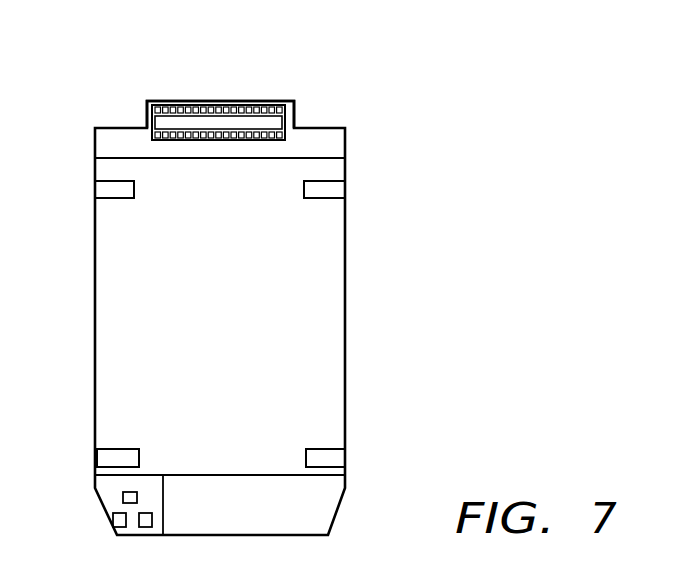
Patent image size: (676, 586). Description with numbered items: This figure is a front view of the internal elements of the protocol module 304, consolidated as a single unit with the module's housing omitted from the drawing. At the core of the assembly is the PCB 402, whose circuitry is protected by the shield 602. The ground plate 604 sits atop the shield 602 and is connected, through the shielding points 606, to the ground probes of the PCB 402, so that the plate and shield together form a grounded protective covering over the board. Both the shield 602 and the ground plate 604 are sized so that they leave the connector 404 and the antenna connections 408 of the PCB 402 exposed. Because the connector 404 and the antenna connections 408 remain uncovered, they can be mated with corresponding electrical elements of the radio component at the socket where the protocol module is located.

The protocol module 304 is at (432, 99).
The PCB 402 is at (325, 127).
The connector 404 is at (177, 100).
The antenna connections 408 is at (110, 520).
The shield 602 is at (323, 508).
The ground plate 604 is at (345, 313).
The shielding points 606 is at (343, 188).